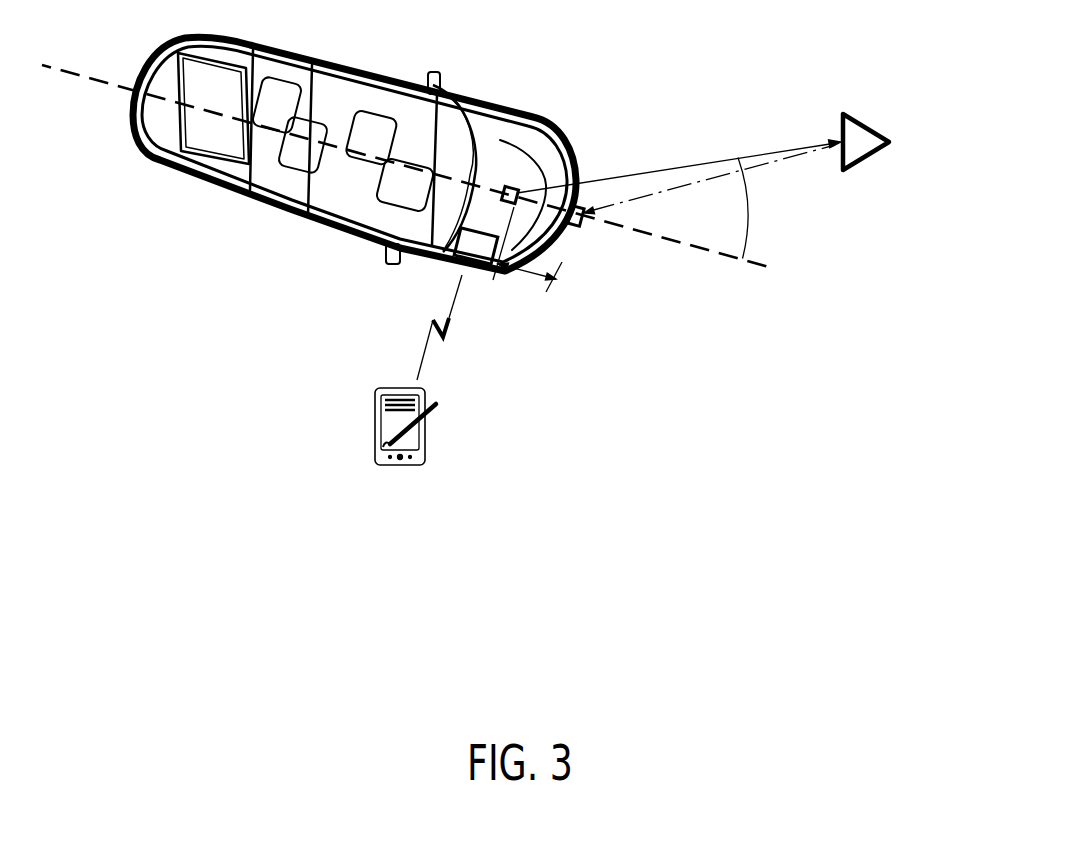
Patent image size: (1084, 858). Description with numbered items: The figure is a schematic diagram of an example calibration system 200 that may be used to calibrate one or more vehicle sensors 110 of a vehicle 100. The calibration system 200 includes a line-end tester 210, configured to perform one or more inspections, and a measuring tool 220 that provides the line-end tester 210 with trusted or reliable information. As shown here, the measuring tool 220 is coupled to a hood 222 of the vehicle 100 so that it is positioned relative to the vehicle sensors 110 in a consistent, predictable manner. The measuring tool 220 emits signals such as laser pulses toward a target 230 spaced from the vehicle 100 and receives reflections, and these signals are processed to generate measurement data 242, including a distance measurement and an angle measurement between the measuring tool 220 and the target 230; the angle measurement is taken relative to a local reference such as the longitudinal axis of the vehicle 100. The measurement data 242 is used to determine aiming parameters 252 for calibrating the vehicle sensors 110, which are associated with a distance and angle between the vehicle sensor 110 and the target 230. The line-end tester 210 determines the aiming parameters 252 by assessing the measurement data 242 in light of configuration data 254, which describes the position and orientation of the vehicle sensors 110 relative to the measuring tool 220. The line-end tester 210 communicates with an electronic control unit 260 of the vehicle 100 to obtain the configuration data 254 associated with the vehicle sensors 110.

The vehicle 100 is at (476, 87).
The vehicle sensor 110 is at (585, 226).
The calibration system 200 is at (738, 427).
The line-end tester 210 is at (424, 484).
The measuring tool 220 is at (502, 188).
The hood 222 is at (529, 170).
The target 230 is at (874, 119).
The measurement data 242 is at (788, 148).
The aiming parameters 252 is at (779, 163).
The configuration data 254 is at (527, 257).
The electronic control unit 260 is at (475, 286).